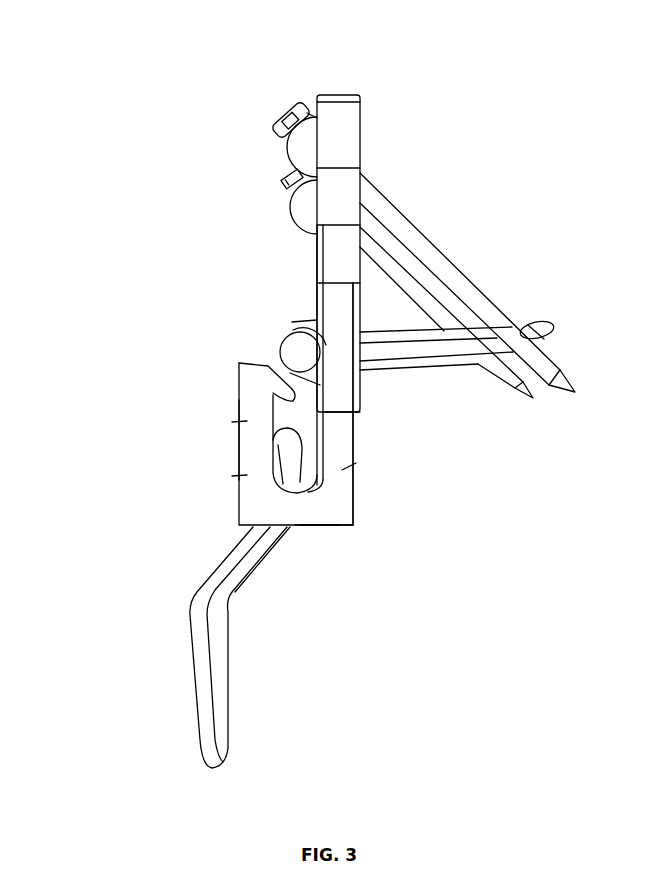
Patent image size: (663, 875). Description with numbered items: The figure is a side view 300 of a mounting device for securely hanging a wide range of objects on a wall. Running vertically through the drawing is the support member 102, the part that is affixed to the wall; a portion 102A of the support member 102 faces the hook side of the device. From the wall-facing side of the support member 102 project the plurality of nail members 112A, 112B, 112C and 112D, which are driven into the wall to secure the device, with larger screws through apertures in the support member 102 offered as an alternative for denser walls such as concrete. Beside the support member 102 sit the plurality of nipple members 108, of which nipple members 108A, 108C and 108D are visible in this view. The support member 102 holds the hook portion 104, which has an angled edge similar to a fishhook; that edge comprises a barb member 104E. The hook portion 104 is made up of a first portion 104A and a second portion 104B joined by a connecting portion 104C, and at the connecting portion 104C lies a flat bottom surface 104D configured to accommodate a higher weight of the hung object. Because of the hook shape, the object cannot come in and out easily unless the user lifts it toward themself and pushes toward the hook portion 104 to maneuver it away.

The side view 300 is at (238, 79).
The support member 102 is at (338, 138).
The front face of support column 102A is at (315, 261).
The hook portion 104 is at (243, 478).
The first portion 104A is at (343, 468).
The second portion 104B is at (247, 422).
The connecting portion 104C is at (318, 506).
The flat bottom surface 104D is at (318, 532).
The barb member 104E is at (243, 363).
The nipple members 108 is at (192, 612).
The nipple member 108A is at (291, 207).
The nipple member 108C is at (288, 150).
The nipple member 108D is at (290, 323).
The nail member 112A is at (413, 280).
The nail member 112B is at (392, 364).
The nail member 112C is at (398, 217).
The nail member 112D is at (440, 355).